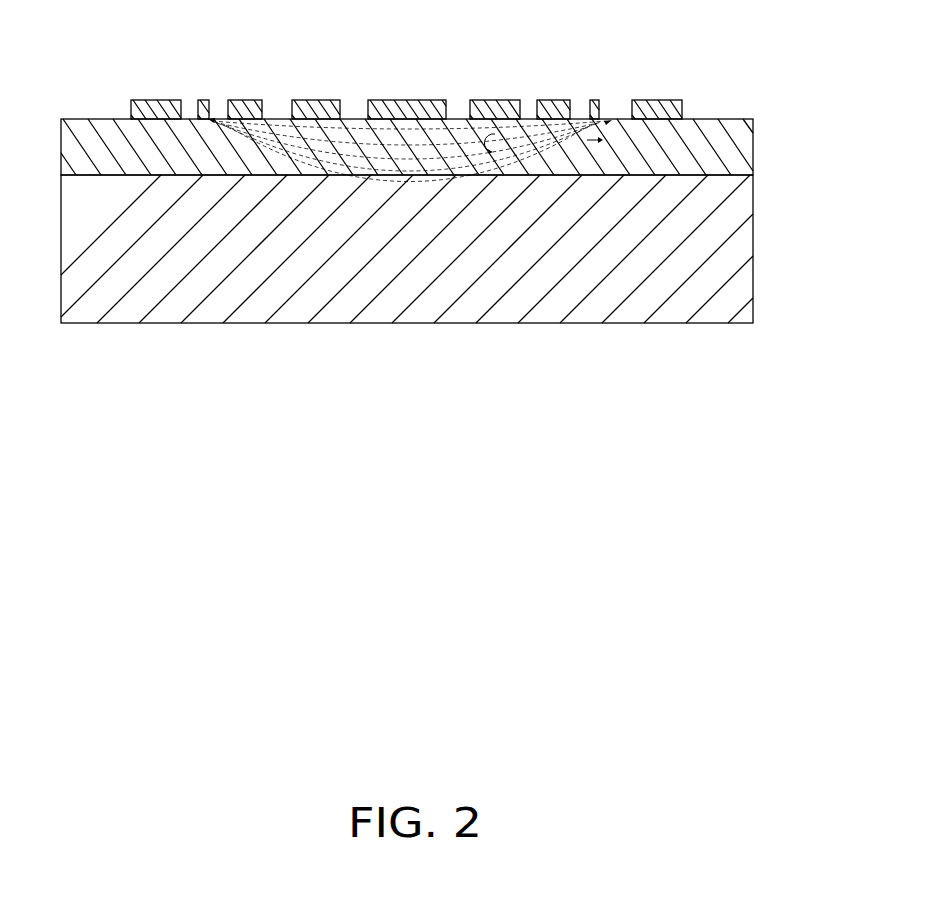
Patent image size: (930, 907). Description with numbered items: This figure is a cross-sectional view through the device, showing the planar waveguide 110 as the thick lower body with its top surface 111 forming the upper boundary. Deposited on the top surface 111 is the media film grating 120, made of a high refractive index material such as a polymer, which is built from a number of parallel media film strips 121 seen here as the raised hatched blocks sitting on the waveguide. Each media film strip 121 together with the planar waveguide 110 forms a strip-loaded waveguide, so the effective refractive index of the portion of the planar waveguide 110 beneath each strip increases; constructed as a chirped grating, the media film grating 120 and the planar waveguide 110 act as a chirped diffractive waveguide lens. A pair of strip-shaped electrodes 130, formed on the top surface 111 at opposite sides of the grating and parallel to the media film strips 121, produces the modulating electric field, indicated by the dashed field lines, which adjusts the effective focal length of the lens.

The planar waveguide 110 is at (653, 295).
The top surface 111 is at (317, 102).
The media film grating 120 is at (401, 94).
The media film strips 121 is at (482, 108).
The strip-shaped electrodes 130 is at (153, 106).